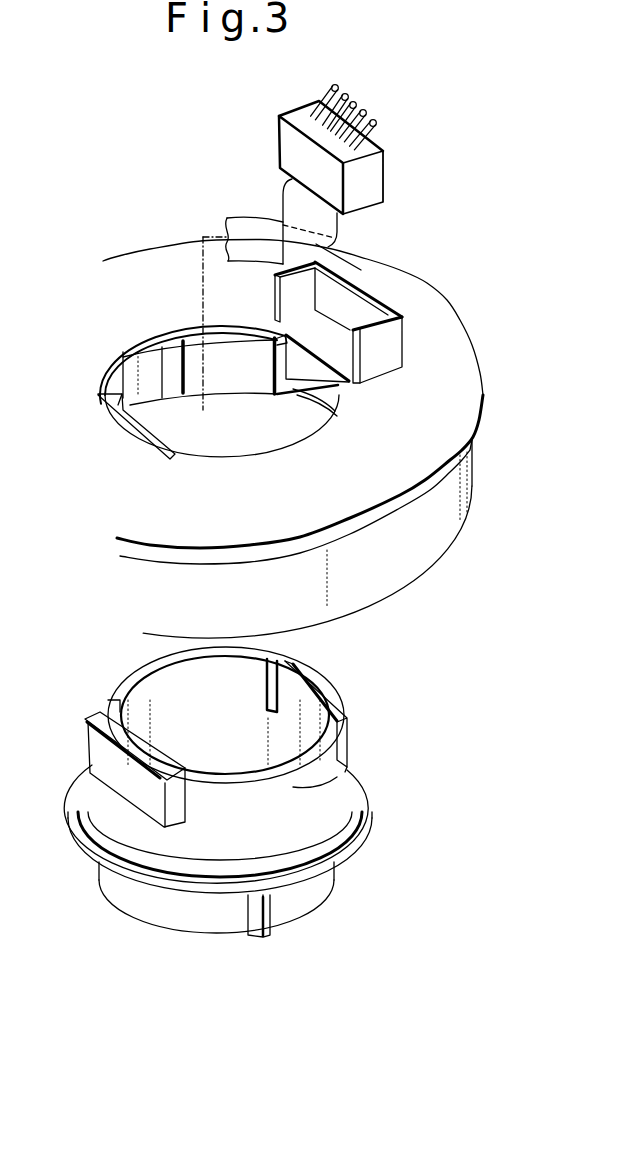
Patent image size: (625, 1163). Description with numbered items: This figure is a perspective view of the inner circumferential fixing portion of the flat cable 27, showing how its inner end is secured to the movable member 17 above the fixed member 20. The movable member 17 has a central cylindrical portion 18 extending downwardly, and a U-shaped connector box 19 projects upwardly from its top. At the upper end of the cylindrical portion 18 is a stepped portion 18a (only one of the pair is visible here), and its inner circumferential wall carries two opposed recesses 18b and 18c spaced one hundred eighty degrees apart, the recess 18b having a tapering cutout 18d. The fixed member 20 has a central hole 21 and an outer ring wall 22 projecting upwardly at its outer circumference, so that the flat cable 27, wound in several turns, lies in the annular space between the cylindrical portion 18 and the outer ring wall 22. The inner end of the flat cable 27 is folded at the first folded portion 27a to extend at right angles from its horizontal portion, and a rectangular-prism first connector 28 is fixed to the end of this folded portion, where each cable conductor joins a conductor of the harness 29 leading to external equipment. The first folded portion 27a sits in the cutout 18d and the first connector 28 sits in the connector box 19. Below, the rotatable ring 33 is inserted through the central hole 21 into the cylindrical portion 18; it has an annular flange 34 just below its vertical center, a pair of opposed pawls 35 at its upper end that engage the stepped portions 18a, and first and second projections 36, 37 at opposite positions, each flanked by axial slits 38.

The movable member 17 is at (476, 342).
The cylindrical portion 18 is at (147, 373).
The stepped portion 18a is at (177, 325).
The recess 18b is at (272, 365).
The recess 18c is at (158, 440).
The tapering cutout 18d is at (325, 388).
The connector box 19 is at (392, 350).
The fixed member 20 is at (427, 575).
The central hole 21 is at (308, 405).
The outer ring wall 22 is at (460, 507).
The flat cable 27 is at (250, 218).
The first folded portion 27a is at (317, 243).
The first connector 28 is at (373, 183).
The harness 29 is at (368, 133).
The rotatable ring 33 is at (110, 683).
The annular flange 34 is at (83, 830).
The pawl 35 is at (337, 777).
The first projection 36 is at (330, 688).
The second projection 37 is at (98, 743).
The axial slit 38 is at (265, 683).